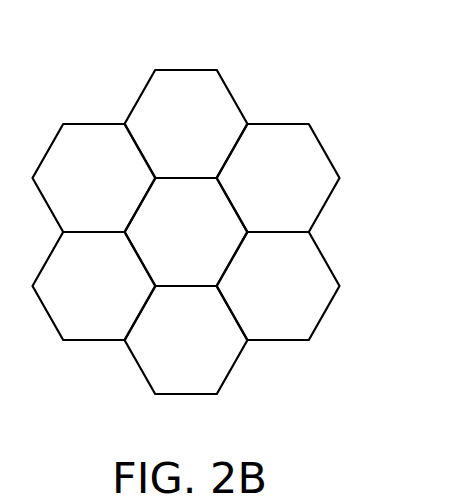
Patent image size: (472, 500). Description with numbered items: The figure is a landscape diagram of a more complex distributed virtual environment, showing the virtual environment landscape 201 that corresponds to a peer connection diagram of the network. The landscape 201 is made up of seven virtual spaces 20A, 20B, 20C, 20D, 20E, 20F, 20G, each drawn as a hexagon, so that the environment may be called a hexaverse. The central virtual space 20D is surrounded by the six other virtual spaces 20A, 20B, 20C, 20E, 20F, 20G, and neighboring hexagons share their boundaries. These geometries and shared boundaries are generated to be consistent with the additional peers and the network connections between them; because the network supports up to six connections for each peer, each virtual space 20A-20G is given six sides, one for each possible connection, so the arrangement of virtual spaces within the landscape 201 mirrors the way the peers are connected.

The virtual environment landscape 201 is at (210, 206).
The virtual space 20A is at (94, 178).
The virtual space 20B is at (186, 124).
The virtual space 20C is at (278, 178).
The virtual space 20D is at (186, 232).
The virtual space 20E is at (94, 286).
The virtual space 20F is at (186, 340).
The virtual space 20G is at (278, 286).